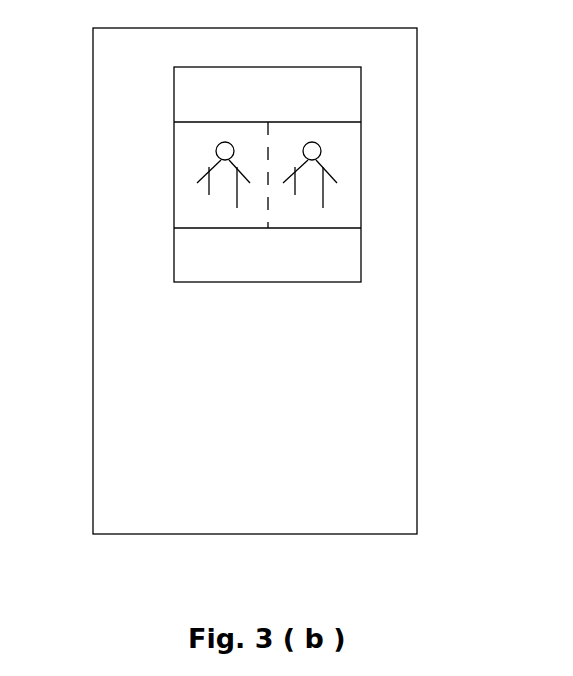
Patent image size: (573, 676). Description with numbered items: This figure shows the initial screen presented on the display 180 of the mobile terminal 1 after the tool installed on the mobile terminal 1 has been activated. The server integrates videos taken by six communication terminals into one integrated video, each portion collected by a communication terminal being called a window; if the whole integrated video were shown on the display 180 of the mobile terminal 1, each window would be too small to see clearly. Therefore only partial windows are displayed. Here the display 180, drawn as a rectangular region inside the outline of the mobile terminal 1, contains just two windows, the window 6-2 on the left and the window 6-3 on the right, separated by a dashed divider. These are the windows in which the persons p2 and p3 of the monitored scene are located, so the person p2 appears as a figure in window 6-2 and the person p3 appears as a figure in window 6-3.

The mobile terminal 1 is at (255, 281).
The display 180 is at (323, 88).
The window 6-2 is at (227, 166).
The window 6-3 is at (321, 166).
The person p2 is at (145, 202).
The person p3 is at (393, 188).